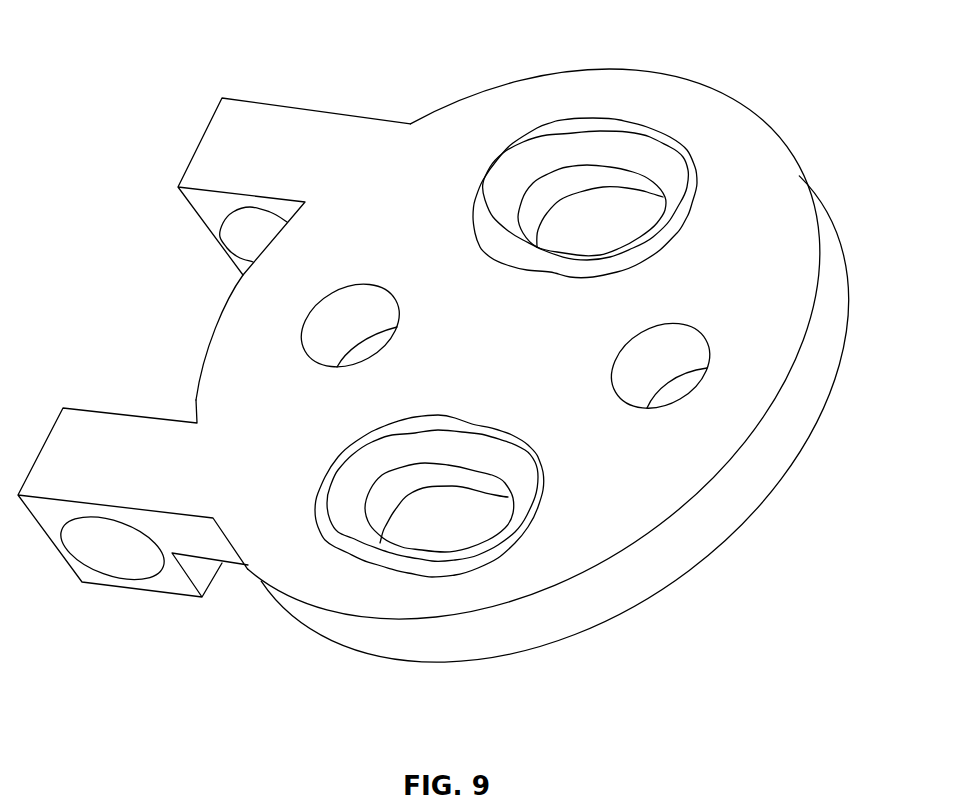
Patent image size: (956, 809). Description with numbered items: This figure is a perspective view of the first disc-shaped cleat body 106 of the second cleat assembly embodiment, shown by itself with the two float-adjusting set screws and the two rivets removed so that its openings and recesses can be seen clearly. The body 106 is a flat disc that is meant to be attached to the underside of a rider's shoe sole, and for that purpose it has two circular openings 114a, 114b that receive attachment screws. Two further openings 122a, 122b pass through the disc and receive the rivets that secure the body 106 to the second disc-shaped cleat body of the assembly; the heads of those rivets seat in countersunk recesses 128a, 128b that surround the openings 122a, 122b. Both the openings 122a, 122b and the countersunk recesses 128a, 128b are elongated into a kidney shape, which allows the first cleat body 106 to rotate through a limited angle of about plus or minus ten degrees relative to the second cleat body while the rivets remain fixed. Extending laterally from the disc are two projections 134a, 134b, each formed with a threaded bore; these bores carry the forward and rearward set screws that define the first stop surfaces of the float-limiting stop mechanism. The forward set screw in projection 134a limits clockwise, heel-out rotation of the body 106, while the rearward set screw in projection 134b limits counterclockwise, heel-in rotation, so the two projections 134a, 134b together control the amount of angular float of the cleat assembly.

The first disc-shaped cleat body 106 is at (773, 163).
The circular opening 114a is at (678, 355).
The circular opening 114b is at (315, 341).
The opening 122a is at (640, 207).
The opening 122b is at (463, 545).
The countersunk recess 128a is at (573, 147).
The countersunk recess 128b is at (368, 558).
The projection 134a is at (293, 118).
The projection 134b is at (112, 425).